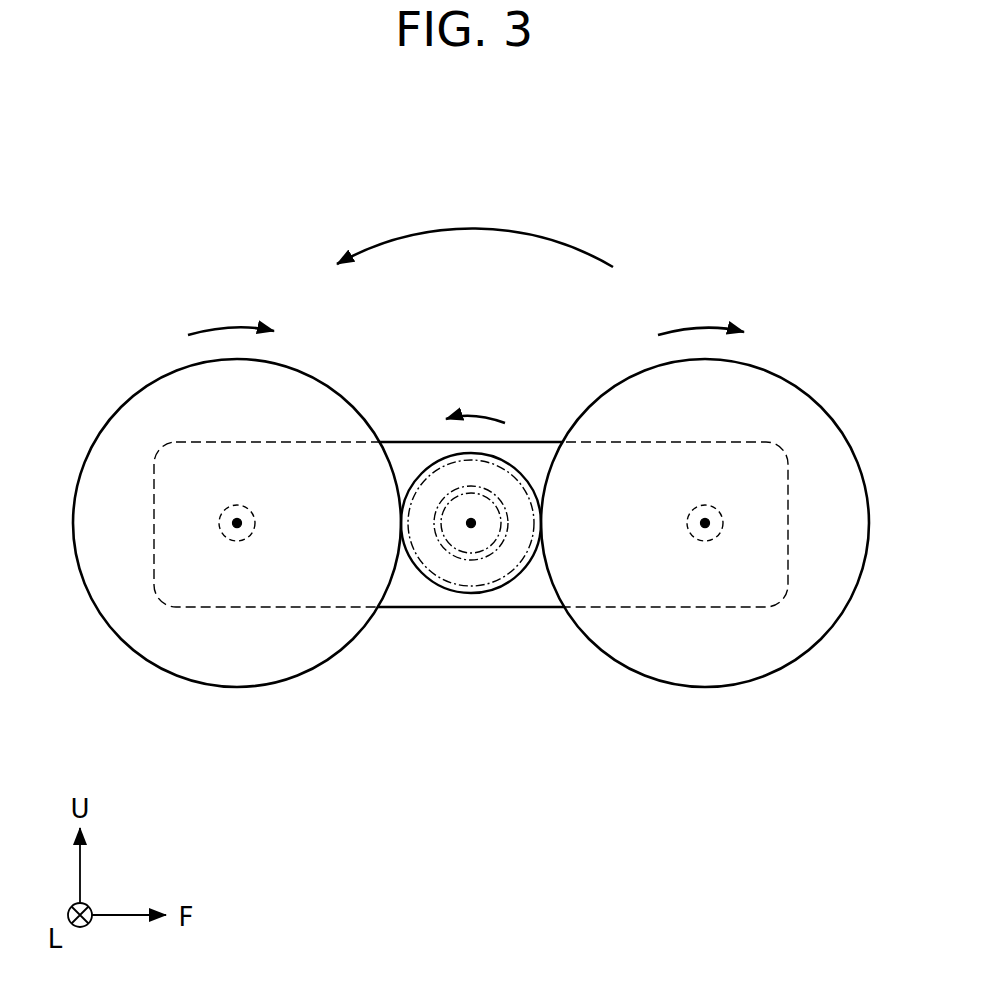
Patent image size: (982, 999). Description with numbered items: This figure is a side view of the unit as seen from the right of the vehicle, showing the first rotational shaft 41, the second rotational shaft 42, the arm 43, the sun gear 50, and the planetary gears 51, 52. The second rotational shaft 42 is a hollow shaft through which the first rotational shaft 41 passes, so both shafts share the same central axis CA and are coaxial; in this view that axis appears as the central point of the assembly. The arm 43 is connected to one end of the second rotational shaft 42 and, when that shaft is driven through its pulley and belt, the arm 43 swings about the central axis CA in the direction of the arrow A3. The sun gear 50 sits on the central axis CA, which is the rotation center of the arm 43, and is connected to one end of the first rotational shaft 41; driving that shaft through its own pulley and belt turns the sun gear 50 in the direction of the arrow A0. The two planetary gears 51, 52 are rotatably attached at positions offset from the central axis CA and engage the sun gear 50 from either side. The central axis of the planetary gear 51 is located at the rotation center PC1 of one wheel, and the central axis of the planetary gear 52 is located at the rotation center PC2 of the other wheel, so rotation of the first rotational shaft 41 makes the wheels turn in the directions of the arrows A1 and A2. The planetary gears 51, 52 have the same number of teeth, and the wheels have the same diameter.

The planetary gear 51 is at (152, 415).
The planetary gear 52 is at (792, 415).
The sun gear 50 is at (432, 463).
The first rotational shaft 41 is at (465, 538).
The second rotational shaft 42 is at (435, 560).
The arm 43 is at (531, 588).
The central axis CA is at (471, 523).
The rotation center of the wheel 61 PC1 is at (237, 530).
The rotation center of the wheel 62 PC2 is at (705, 530).
The arrow indicating rotation direction of the sun gear A0 is at (484, 418).
The arrow indicating rotation direction of the wheel 61 A1 is at (230, 331).
The arrow indicating rotation direction of the wheel 62 A2 is at (716, 329).
The arrow indicating rotation direction of the arm A3 is at (481, 228).